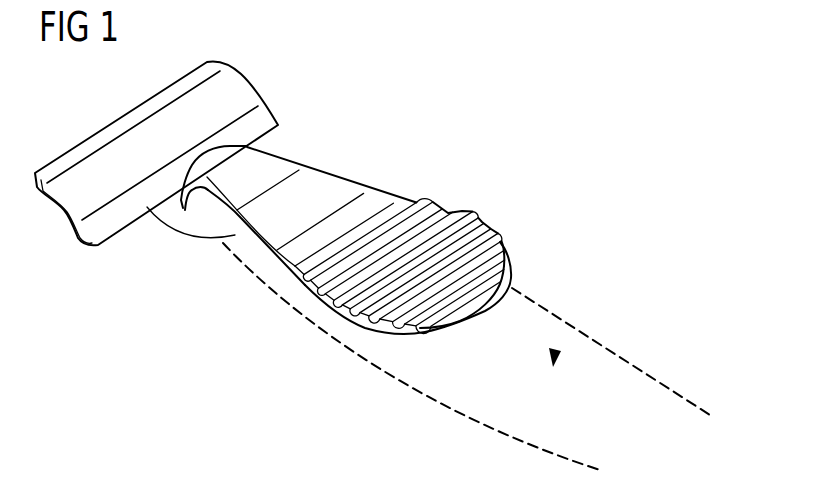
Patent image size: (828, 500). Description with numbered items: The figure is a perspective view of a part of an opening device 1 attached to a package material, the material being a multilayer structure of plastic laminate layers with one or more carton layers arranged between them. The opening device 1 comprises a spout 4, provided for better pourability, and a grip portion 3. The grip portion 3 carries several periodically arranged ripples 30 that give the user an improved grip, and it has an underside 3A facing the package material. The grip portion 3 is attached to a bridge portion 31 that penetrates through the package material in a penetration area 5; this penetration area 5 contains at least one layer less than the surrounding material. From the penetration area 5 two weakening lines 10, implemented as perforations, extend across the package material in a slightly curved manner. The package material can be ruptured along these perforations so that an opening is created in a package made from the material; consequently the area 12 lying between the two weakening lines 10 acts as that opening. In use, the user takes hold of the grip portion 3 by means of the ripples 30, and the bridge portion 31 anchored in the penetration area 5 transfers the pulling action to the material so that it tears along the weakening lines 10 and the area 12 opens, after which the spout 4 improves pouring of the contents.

The device / applicator assembly 1 is at (500, 112).
The grip portion 3 is at (313, 190).
The bottom surface of pad 3A is at (468, 342).
The spout 4 is at (105, 160).
The penetration area 5 is at (180, 226).
The weakening lines 10 is at (633, 367).
The area between the two perforations 12 is at (559, 350).
The ripples 30 is at (427, 198).
The bridge portion 31 is at (196, 199).